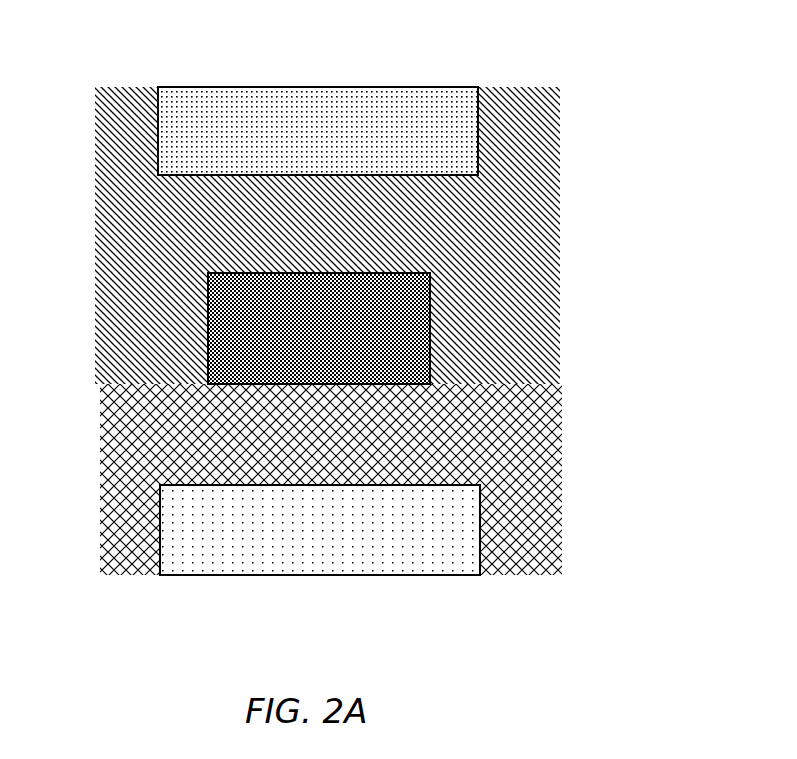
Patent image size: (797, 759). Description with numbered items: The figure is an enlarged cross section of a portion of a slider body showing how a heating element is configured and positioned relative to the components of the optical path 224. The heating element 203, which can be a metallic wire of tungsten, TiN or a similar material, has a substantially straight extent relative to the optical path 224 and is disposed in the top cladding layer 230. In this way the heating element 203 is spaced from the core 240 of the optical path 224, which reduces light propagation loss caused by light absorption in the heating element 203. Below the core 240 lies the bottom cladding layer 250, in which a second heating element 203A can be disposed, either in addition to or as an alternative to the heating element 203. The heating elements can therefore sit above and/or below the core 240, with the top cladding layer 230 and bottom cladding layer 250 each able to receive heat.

The optical path 224 is at (369, 301).
The heating element 203 is at (170, 130).
The top cladding layer 230 is at (125, 205).
The core 240 is at (227, 325).
The bottom cladding layer 250 is at (132, 431).
The second heating element 203A is at (168, 543).